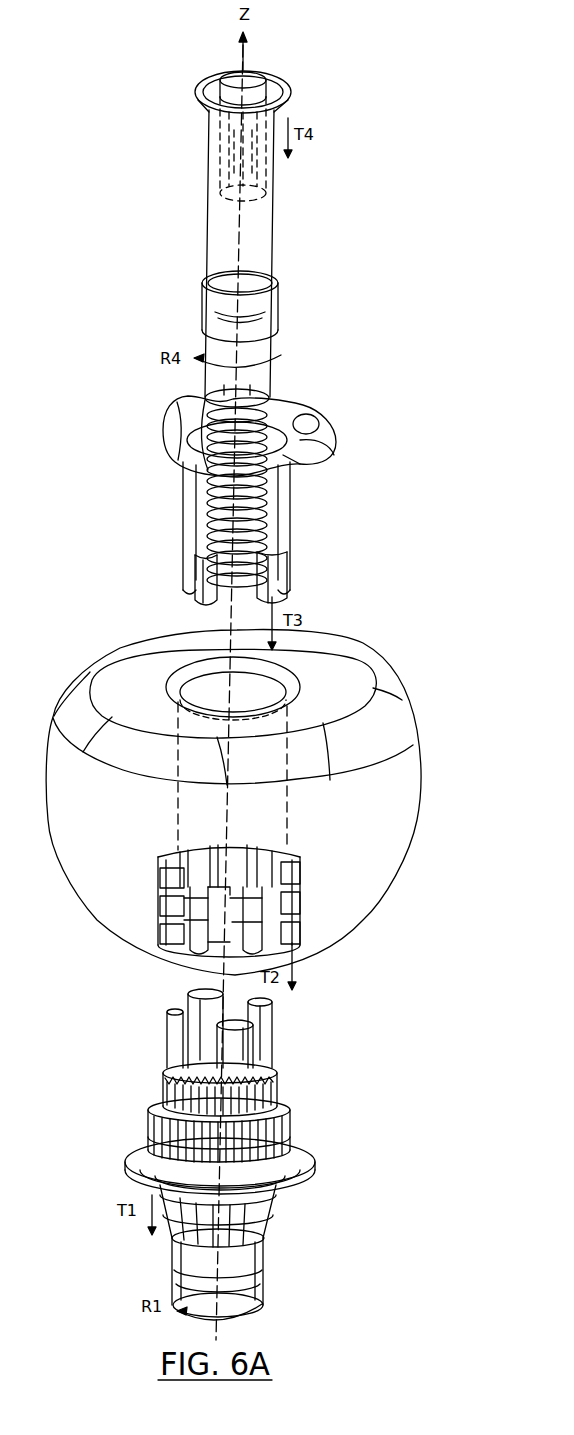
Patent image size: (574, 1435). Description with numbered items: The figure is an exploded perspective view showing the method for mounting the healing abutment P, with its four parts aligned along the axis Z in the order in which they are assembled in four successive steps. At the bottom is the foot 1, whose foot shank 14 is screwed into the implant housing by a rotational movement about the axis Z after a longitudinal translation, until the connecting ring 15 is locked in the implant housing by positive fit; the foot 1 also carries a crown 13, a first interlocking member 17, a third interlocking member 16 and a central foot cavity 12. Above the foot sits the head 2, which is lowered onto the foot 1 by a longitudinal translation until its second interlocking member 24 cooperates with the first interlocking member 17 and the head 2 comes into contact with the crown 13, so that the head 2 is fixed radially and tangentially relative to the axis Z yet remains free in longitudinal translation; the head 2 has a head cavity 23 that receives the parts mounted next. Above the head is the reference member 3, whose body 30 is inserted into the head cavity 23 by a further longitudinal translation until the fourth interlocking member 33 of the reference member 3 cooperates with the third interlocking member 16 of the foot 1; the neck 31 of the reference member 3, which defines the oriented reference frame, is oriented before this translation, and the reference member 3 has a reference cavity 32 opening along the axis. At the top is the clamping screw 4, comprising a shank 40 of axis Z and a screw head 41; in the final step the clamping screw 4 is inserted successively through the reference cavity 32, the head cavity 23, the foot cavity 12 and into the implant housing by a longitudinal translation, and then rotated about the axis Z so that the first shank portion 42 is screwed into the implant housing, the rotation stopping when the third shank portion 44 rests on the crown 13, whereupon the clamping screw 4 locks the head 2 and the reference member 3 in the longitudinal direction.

The healing abutment P is at (188, 70).
The foot 1 is at (327, 1165).
The foot cavity 12 is at (193, 993).
The crown 13 is at (297, 1182).
The foot shank 14 is at (263, 1256).
The connecting ring 15 is at (280, 1206).
The third interlocking member 16 is at (273, 1030).
The first interlocking member 17 is at (290, 1107).
The head 2 is at (394, 653).
The head cavity 23 is at (278, 681).
The second interlocking member 24 is at (300, 950).
The reference member 3 is at (355, 445).
The body 30 is at (292, 520).
The neck 31 is at (312, 468).
The reference cavity 32 is at (212, 593).
The fourth interlocking member 33 is at (292, 585).
The clamping screw 4 is at (296, 227).
The shank 40 is at (208, 213).
The screw head 41 is at (292, 92).
The first shank portion 42 is at (270, 396).
The third shank portion 44 is at (280, 311).